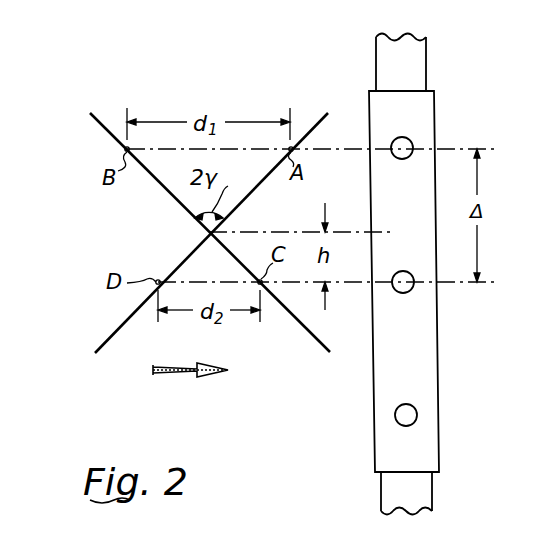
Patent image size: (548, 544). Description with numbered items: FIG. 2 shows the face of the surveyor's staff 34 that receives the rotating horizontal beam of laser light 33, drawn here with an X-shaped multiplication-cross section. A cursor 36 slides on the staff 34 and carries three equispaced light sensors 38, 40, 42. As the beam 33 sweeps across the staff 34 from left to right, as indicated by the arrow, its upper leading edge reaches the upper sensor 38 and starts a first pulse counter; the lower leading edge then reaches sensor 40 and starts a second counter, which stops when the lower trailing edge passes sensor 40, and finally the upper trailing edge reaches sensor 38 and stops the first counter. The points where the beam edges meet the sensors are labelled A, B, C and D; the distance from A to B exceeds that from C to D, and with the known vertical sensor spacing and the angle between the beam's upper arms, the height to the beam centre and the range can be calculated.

The horizontal beam of laser light 33 is at (102, 125).
The surveyor's staff 34 is at (418, 490).
The cursor 36 is at (428, 108).
The upper light sensor 38 is at (411, 141).
The light sensor 40 is at (410, 290).
The light sensor 42 is at (418, 412).